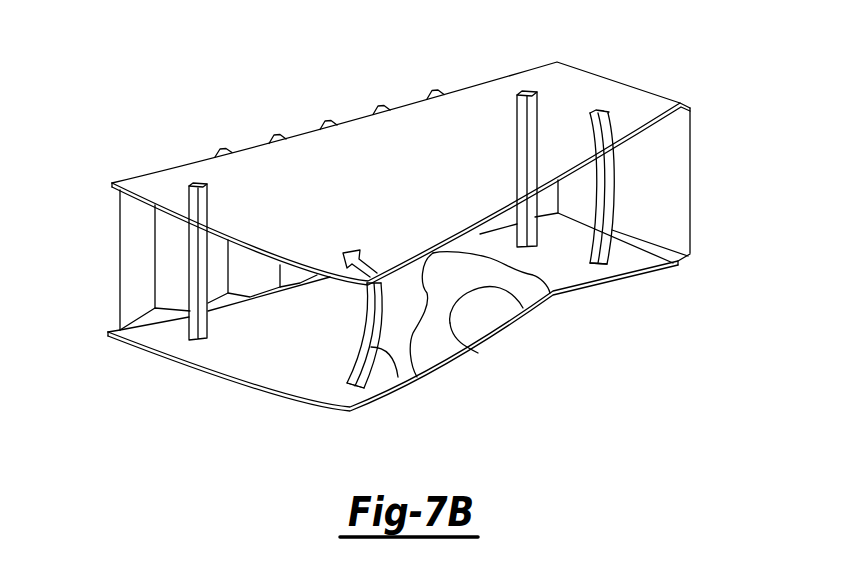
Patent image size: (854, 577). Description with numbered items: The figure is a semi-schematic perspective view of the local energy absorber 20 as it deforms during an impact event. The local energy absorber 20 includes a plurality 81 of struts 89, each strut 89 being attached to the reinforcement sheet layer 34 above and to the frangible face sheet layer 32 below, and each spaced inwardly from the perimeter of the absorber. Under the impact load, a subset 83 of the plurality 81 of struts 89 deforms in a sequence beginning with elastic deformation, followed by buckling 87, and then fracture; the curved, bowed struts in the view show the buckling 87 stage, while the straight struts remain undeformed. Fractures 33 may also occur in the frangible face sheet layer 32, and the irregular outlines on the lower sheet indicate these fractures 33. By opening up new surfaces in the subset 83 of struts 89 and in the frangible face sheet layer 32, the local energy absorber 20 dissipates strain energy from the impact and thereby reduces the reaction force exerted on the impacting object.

The local energy absorber 20 is at (242, 104).
The frangible face sheet layer 32 is at (623, 277).
The reinforcement sheet layer 34 is at (617, 80).
The fractures 33 is at (547, 295).
The plurality of struts 81 is at (340, 358).
The subset of the plurality of struts 83 is at (197, 297).
The buckling 87 is at (371, 290).
The strut 89 is at (600, 218).